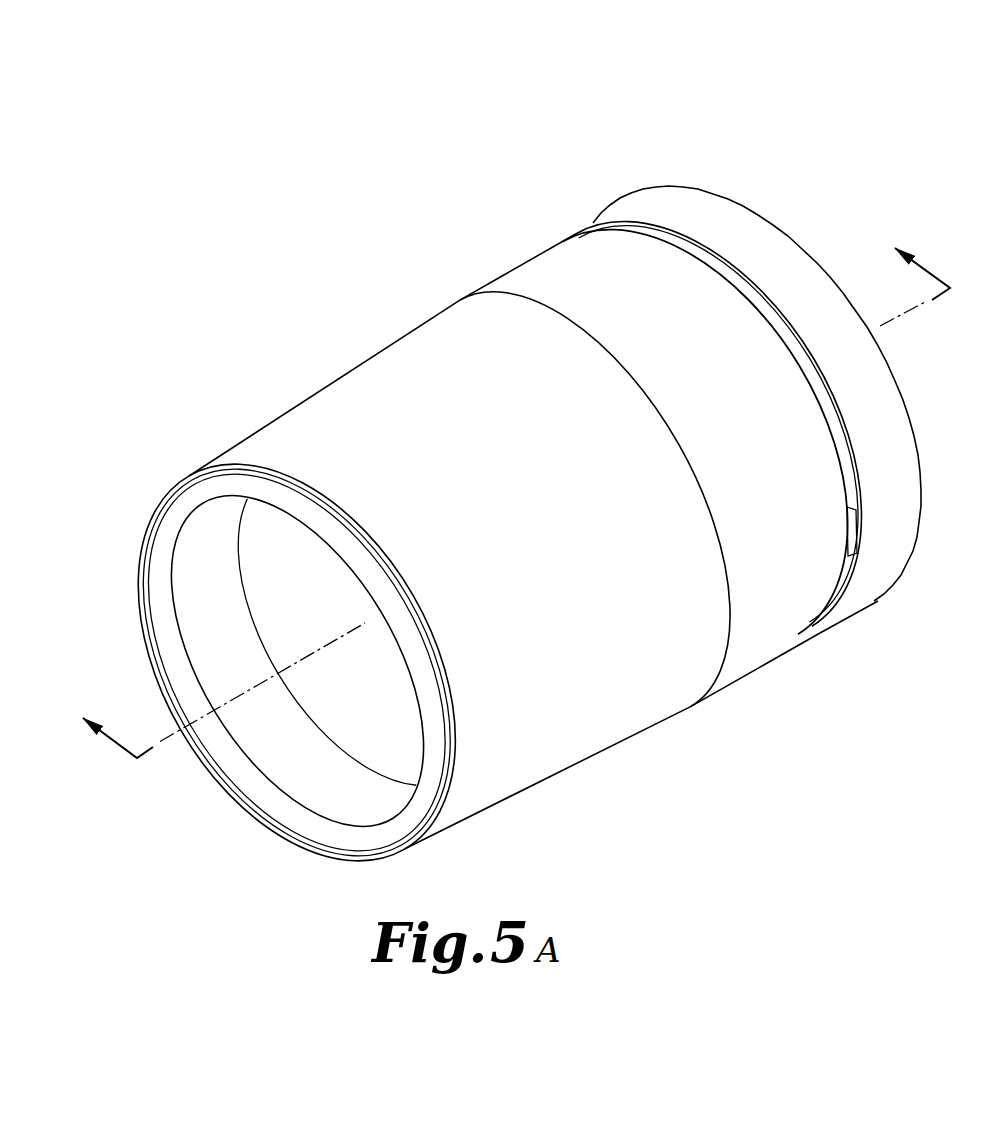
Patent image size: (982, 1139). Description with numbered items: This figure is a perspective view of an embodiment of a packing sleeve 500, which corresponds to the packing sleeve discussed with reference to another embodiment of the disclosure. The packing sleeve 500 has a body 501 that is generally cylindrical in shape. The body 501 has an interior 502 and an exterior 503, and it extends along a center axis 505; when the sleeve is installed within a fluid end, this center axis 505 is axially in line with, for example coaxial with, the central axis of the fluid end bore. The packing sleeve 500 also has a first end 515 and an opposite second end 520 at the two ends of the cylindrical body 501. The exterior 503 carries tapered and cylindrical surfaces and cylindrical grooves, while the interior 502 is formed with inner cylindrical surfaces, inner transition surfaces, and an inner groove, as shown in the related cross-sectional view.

The packing sleeve 500 is at (352, 82).
The body 501 is at (388, 262).
The interior 502 is at (787, 205).
The exterior 503 is at (512, 242).
The center axis 505 is at (174, 745).
The first end 515 is at (160, 512).
The second end 520 is at (718, 188).